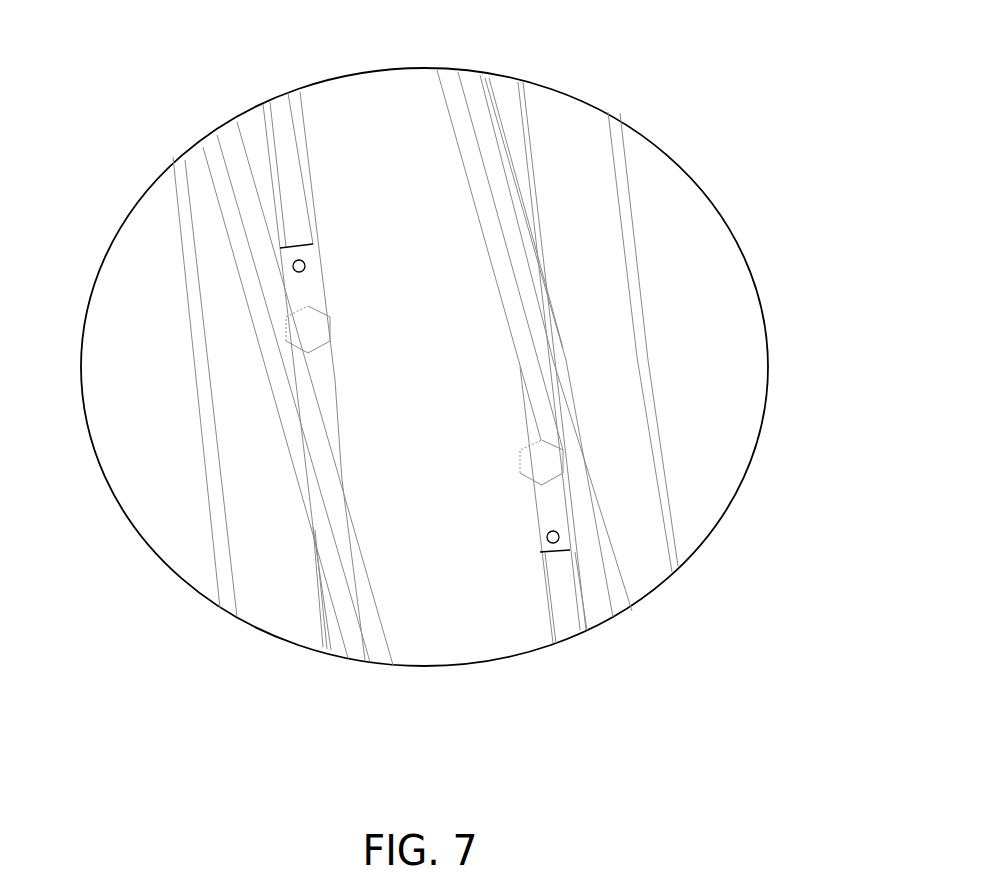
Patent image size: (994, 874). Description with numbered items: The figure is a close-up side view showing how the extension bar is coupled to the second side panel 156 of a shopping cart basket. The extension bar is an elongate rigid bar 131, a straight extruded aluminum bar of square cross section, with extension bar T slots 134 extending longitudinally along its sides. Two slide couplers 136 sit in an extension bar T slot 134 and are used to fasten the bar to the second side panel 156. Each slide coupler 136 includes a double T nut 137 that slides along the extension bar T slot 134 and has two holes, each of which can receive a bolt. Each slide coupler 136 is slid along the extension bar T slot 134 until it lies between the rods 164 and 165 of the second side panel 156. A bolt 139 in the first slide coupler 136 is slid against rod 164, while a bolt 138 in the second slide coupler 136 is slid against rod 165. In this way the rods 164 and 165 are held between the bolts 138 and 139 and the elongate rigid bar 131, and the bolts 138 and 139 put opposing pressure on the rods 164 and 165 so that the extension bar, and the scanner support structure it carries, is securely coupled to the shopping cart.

The elongate rigid bar 131 is at (397, 92).
The extension bar T slot 134 is at (287, 120).
The slide coupler 136 is at (425, 366).
The double T nut 137 is at (313, 255).
The bolt 138 is at (308, 329).
The bolt 139 is at (542, 463).
The second side panel 156 is at (742, 277).
The rod 164 is at (473, 88).
The rod 165 is at (220, 170).